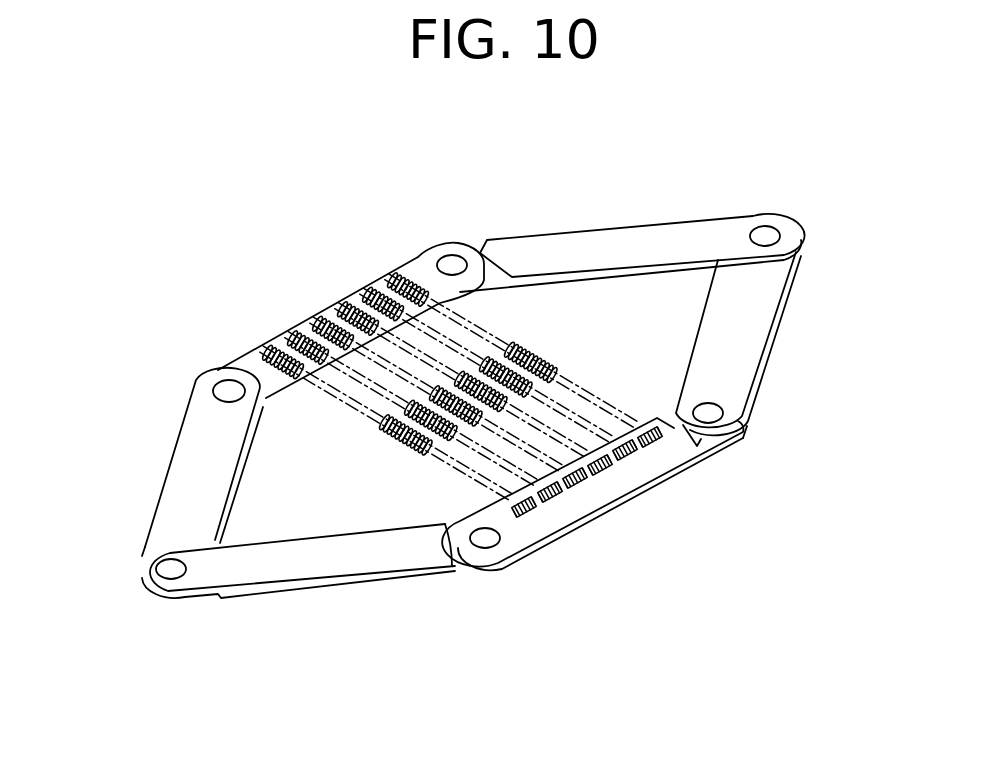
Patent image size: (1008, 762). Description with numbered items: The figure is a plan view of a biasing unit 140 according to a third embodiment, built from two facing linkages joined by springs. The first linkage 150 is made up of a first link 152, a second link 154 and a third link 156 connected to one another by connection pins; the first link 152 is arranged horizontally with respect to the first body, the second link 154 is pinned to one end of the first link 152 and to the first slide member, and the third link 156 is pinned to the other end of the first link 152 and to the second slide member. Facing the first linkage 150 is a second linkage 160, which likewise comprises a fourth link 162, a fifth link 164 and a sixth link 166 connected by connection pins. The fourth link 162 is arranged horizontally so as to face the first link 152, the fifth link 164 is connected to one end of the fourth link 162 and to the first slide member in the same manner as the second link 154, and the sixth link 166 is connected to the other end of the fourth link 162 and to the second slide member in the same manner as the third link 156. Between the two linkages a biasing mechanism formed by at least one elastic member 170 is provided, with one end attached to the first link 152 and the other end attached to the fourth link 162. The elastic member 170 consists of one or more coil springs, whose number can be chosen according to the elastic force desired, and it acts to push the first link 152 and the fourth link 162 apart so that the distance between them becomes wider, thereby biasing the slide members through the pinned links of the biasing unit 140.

The biasing unit 140 is at (473, 396).
The first linkage 150 is at (298, 363).
The first link 152 is at (330, 313).
The second link 154 is at (194, 452).
The third link 156 is at (512, 247).
The second linkage 160 is at (488, 536).
The fourth link 162 is at (597, 497).
The fifth link 164 is at (313, 587).
The sixth link 166 is at (748, 390).
The elastic member 170 is at (533, 363).